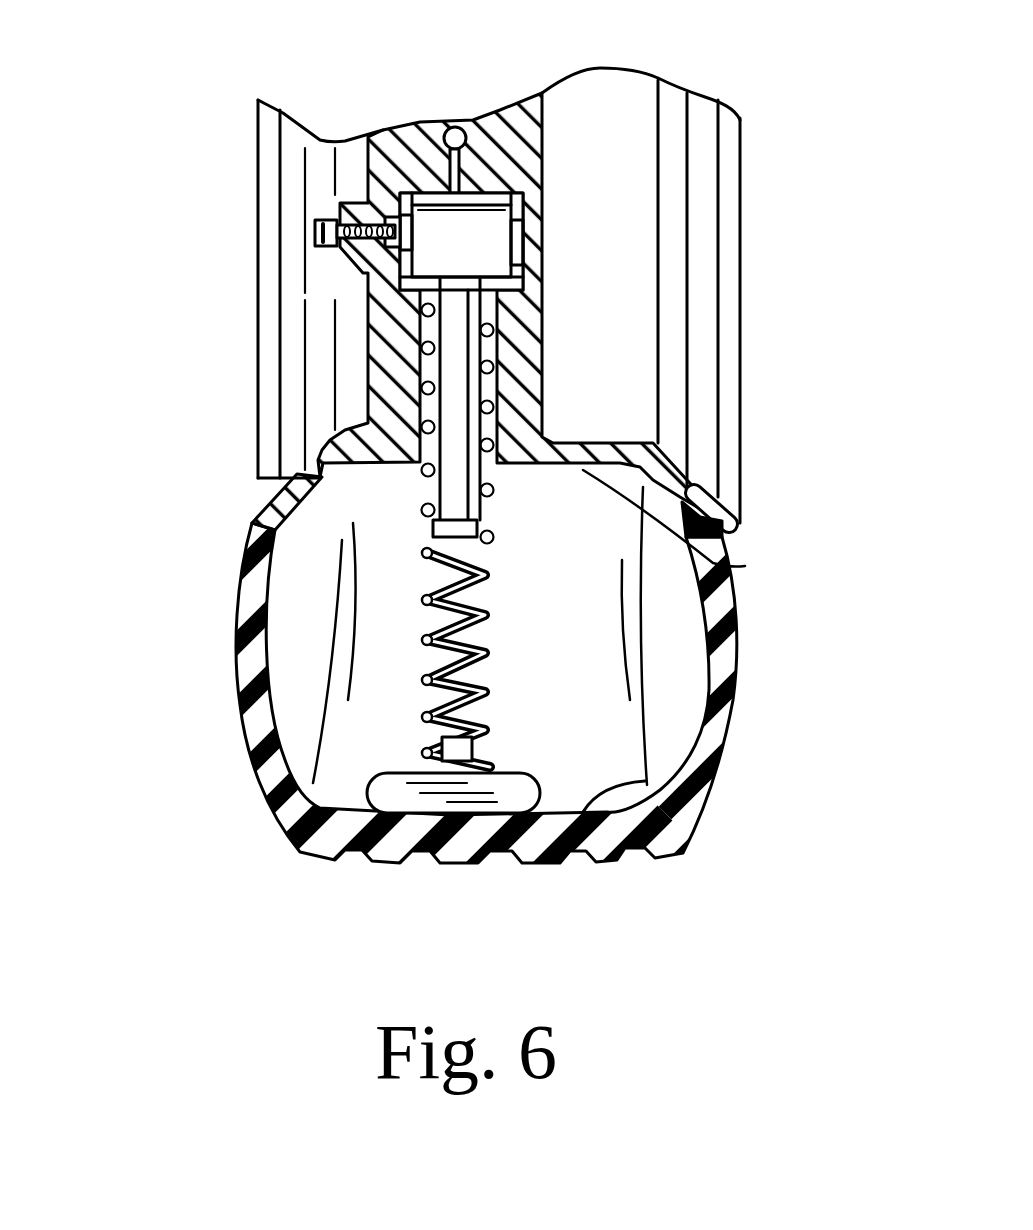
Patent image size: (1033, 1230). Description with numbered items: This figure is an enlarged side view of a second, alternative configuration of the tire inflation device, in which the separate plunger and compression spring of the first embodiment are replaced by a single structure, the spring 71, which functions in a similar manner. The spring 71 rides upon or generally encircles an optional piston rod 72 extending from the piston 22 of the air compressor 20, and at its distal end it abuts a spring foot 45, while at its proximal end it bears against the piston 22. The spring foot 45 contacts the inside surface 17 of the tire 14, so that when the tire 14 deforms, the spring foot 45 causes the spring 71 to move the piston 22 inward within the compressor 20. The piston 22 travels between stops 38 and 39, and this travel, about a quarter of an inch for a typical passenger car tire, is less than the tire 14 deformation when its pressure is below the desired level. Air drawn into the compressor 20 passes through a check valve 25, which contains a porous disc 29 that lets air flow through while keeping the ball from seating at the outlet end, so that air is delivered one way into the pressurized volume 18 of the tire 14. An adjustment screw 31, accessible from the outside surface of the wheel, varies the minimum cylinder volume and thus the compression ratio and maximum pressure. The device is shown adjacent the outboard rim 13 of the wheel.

The outboard rim 13 is at (745, 566).
The tire 14 is at (253, 657).
The inside surface 17 is at (645, 781).
The pressurized volume 18 is at (641, 630).
The air compressor 20 is at (467, 252).
The piston 22 is at (443, 280).
The check valve 25 is at (462, 128).
The porous disc 29 is at (462, 128).
The adjustment screw 31 is at (350, 217).
The stop 38 is at (517, 262).
The stop 39 is at (373, 322).
The spring foot 45 is at (517, 773).
The spring 71 is at (420, 598).
The piston rod 72 is at (453, 485).